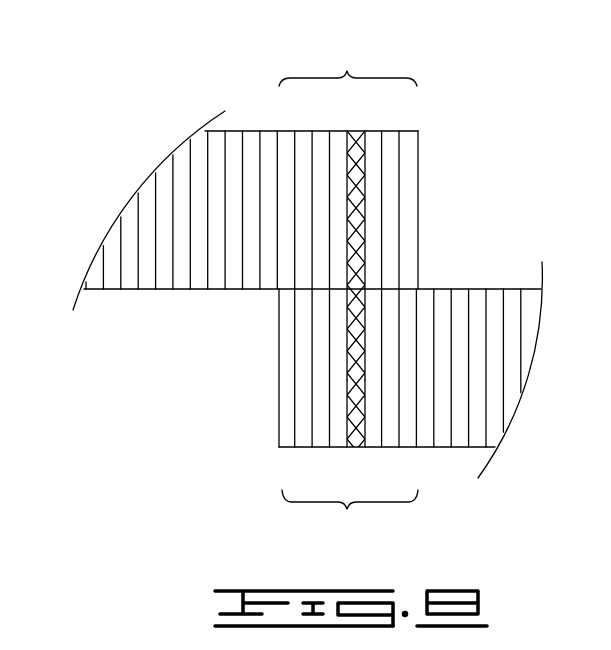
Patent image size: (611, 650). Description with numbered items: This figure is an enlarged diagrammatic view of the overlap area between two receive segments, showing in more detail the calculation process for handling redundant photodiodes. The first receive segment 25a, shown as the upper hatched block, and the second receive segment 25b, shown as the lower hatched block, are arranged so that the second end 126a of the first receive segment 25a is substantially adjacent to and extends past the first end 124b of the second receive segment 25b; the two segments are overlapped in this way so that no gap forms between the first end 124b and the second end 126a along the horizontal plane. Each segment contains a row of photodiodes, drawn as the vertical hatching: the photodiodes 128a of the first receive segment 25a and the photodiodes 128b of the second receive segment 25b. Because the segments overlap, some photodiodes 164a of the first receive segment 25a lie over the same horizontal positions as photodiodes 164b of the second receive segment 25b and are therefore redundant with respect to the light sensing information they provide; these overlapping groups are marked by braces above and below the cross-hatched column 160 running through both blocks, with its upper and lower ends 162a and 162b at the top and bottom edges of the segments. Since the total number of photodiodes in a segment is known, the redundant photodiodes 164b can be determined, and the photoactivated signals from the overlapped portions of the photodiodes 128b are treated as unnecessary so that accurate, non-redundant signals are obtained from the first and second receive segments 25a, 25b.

The first receive segment 25a is at (300, 193).
The second receive segment 25b is at (362, 387).
The first end of the second receive segment 124b is at (279, 381).
The second end of the first receive segment 126a is at (418, 152).
The photodiodes of the first receive segment 128a is at (267, 140).
The photodiodes of the second receive segment 128b is at (446, 440).
The bonding strip 160 is at (378, 288).
The upper end of bonding strip 162a is at (355, 135).
The lower end of bonding strip 162b is at (356, 447).
The overlapping photodiodes of the first receive segment 164a is at (347, 72).
The overlapping photodiodes of the second receive segment 164b is at (347, 510).